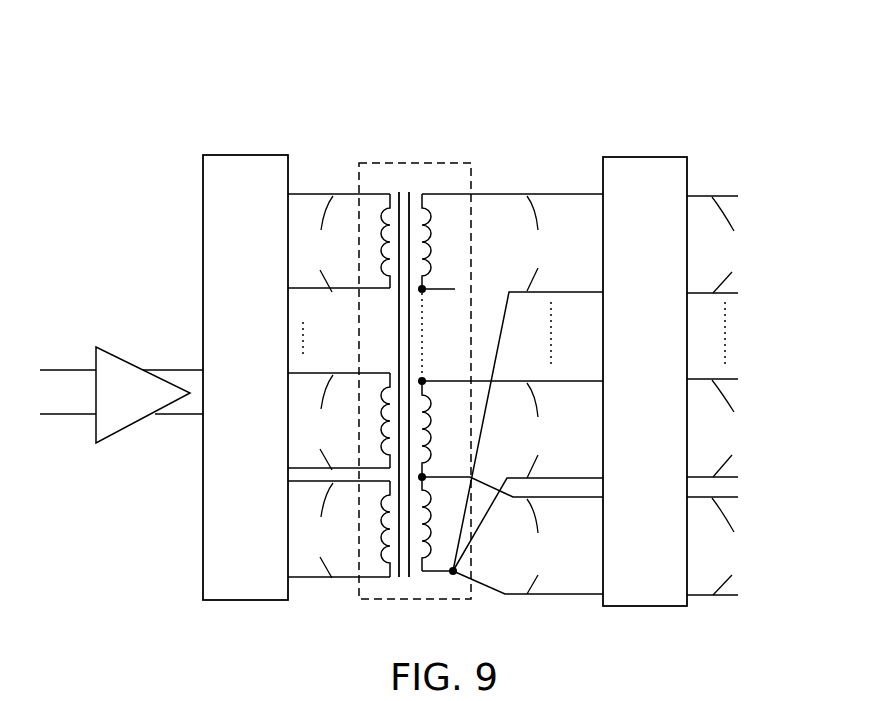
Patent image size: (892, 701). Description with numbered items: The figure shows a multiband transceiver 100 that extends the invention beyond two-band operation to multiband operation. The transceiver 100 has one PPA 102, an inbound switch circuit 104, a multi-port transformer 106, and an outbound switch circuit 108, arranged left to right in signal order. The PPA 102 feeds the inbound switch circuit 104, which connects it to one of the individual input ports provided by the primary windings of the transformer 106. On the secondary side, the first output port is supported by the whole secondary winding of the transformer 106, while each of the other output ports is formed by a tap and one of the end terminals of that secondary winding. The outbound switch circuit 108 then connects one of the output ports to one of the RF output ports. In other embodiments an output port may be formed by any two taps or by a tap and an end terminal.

The multiband transceiver 100 is at (431, 80).
The PPA 102 is at (108, 349).
The inbound switch circuit 104 is at (258, 382).
The multi-port transformer 106 is at (418, 163).
The outbound switch circuit 108 is at (660, 382).